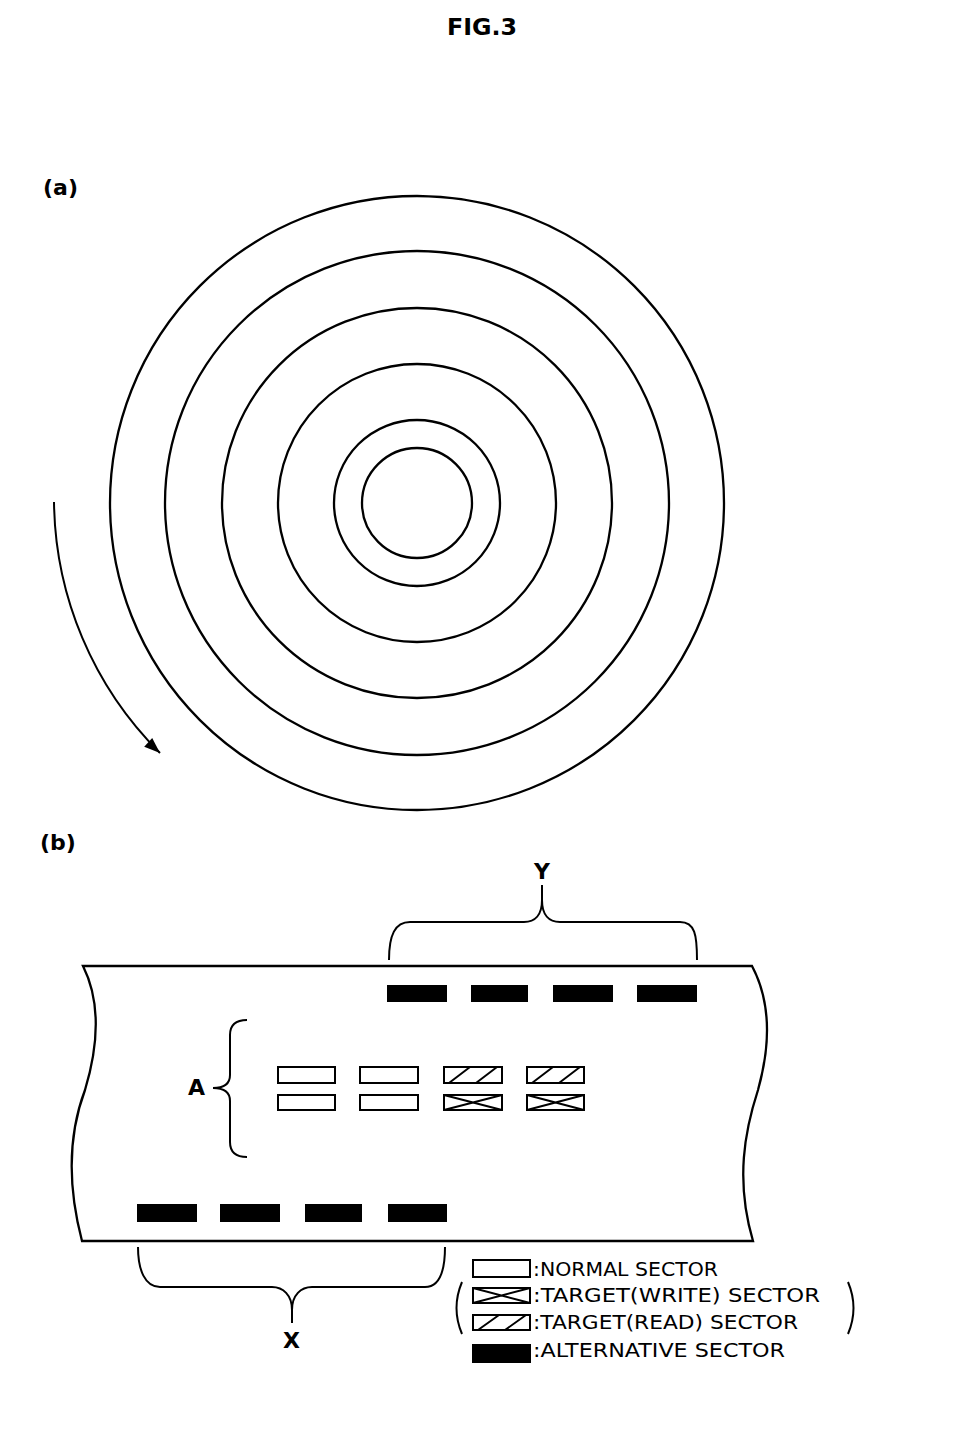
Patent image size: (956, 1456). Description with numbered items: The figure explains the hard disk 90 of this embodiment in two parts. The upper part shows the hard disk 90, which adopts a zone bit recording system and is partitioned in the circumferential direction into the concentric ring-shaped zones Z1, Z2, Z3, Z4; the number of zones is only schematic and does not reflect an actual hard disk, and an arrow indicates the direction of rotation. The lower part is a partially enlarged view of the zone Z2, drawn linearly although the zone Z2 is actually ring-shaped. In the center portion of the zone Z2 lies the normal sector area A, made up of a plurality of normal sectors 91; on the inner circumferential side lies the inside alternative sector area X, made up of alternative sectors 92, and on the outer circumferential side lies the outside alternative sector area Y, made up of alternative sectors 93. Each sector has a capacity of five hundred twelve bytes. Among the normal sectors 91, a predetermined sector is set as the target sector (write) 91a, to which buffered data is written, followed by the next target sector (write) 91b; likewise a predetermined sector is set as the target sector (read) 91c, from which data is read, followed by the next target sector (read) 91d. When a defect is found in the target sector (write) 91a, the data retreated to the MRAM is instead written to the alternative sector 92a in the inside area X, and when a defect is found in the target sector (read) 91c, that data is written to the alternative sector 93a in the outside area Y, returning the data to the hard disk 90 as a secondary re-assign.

The hard disk 90 is at (435, 503).
The zone Z1 is at (583, 283).
The zone Z2 is at (583, 366).
The zone Z3 is at (583, 450).
The zone Z4 is at (527, 533).
The normal sectors 91 is at (485, 1087).
The target sector (write) 91a is at (556, 1110).
The target sector (write) 91b is at (475, 1110).
The target sector (read) 91c is at (551, 1067).
The target sector (read) 91d is at (468, 1067).
The alternative sectors 92 is at (343, 1190).
The alternative sector 92a is at (420, 1203).
The alternative sectors 93 is at (501, 1022).
The alternative sector 93a is at (670, 1002).